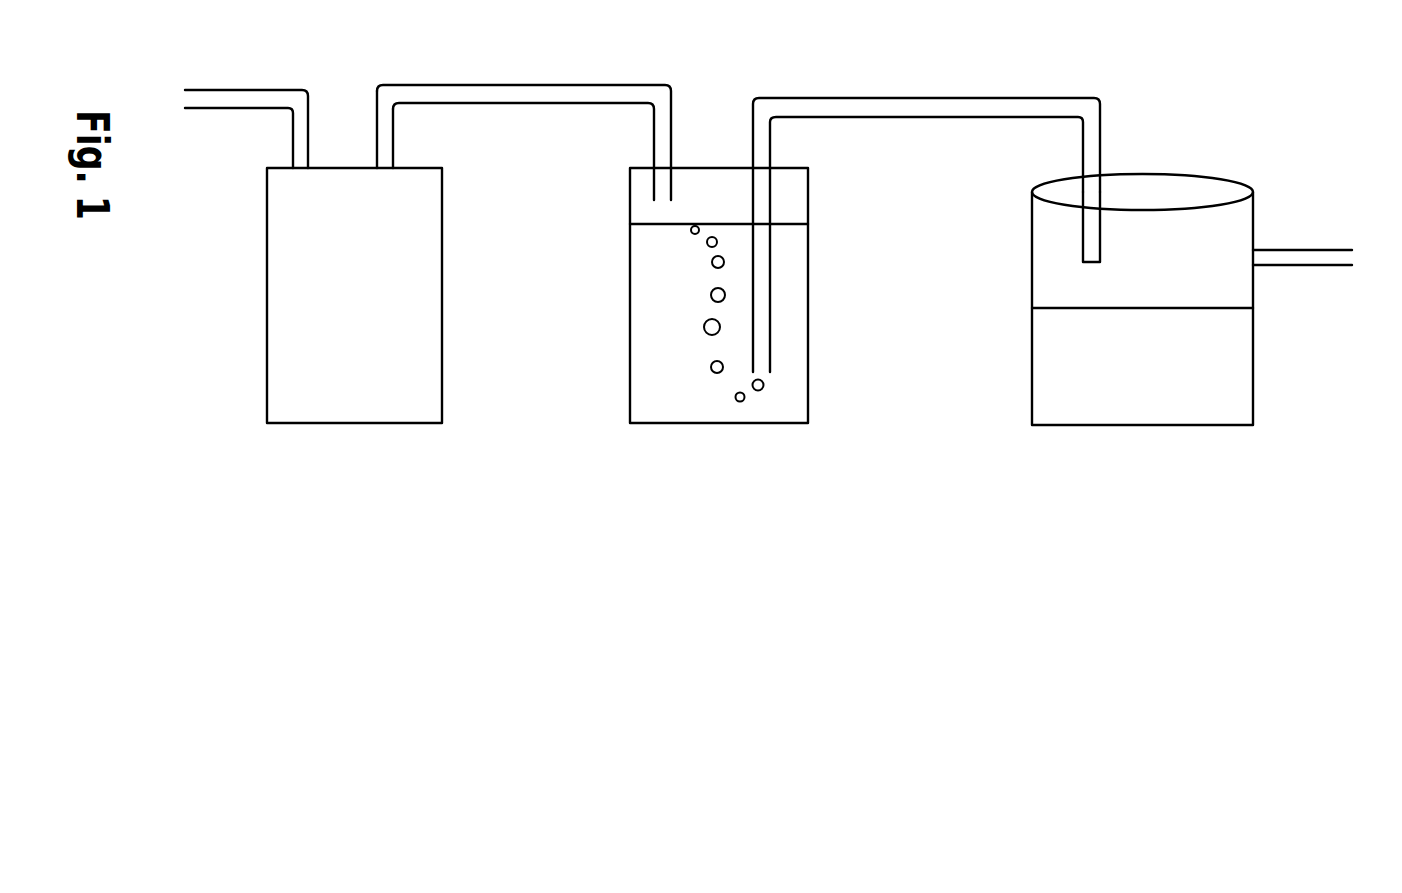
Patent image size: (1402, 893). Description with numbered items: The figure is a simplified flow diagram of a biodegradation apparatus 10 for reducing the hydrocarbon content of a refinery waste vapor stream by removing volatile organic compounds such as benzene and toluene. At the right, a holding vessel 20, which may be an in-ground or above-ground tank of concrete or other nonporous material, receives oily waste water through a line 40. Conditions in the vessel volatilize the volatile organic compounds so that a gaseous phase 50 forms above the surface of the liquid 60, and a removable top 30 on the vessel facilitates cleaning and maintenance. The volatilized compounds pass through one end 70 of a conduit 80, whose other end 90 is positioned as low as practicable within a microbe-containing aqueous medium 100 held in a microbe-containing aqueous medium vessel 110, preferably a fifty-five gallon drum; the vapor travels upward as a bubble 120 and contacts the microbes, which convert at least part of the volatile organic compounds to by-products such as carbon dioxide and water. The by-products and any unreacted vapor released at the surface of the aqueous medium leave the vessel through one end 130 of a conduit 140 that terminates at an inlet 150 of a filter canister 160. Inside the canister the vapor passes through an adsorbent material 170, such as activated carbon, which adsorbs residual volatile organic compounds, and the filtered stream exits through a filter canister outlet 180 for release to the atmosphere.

The biodegradation apparatus 10 is at (720, 95).
The holding vessel 20 is at (1085, 443).
The removable top 30 is at (1183, 197).
The line 40 is at (1295, 268).
The gaseous phase 50 is at (1248, 228).
The liquid 60 is at (1243, 385).
The one end of conduit 70 is at (1082, 247).
The conduit 80 is at (973, 97).
The other end of conduit 90 is at (771, 360).
The microbe-containing aqueous medium 100 is at (657, 277).
The microbe-containing aqueous medium vessel 110 is at (630, 400).
The bubble 120 is at (735, 401).
The one end of conduit 130 is at (653, 188).
The conduit 140 is at (487, 85).
The inlet 150 is at (393, 145).
The filter canister 160 is at (252, 277).
The adsorbent material 170 is at (308, 338).
The filter canister outlet 180 is at (292, 145).